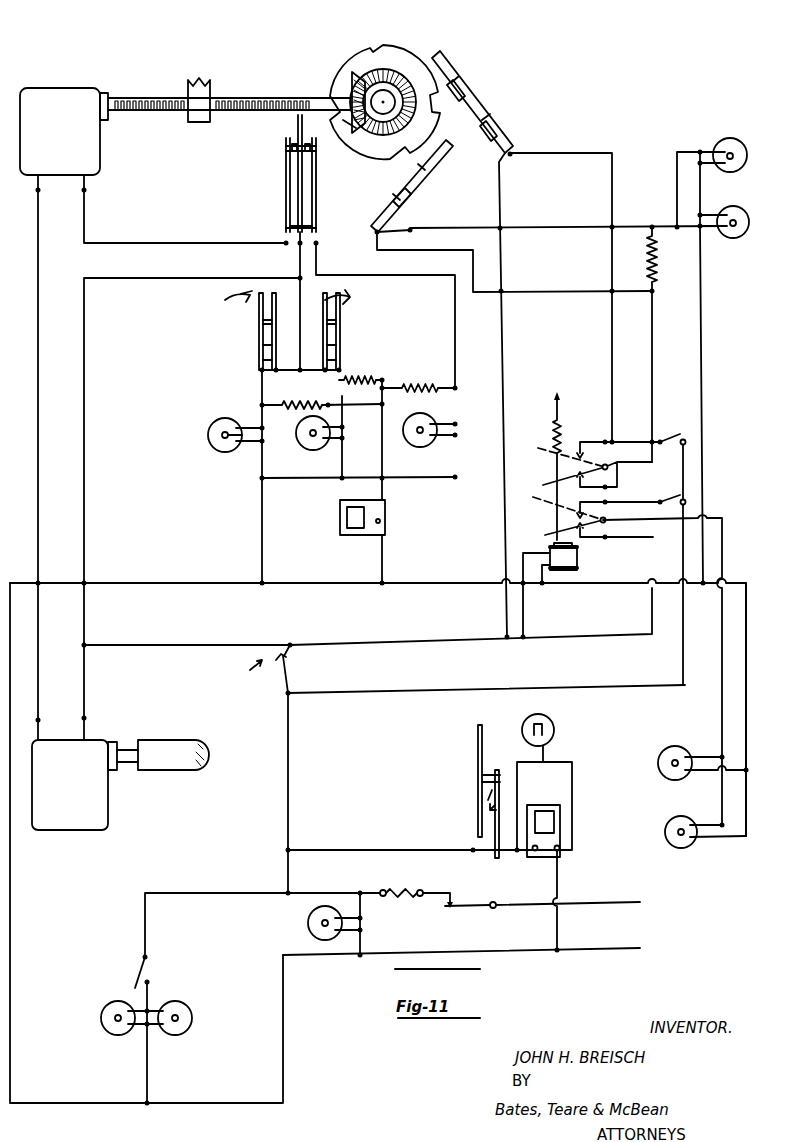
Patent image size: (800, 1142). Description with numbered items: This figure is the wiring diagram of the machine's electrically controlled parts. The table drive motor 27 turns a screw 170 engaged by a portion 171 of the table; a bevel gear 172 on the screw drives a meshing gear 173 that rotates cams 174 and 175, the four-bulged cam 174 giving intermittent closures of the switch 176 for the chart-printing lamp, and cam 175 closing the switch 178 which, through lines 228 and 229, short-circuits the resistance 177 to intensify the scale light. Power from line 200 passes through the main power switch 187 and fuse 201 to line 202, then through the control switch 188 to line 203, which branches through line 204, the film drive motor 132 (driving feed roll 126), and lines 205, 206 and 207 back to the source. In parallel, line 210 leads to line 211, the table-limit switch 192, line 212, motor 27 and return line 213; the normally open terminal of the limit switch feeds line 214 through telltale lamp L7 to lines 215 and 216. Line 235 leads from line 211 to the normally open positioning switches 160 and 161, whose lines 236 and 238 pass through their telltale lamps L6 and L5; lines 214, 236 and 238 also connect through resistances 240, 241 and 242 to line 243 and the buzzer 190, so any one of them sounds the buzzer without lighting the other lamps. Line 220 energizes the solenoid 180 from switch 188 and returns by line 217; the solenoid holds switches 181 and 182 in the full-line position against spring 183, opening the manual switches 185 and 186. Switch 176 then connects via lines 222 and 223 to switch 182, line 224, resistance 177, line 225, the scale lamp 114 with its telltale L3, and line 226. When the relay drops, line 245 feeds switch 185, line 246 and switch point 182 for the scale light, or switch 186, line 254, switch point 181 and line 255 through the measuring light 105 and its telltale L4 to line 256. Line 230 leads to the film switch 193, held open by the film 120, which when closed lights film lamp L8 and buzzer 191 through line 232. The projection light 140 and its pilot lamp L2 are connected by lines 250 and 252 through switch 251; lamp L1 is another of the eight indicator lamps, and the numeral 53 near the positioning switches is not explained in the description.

The table drive motor 27 is at (90, 160).
The screw 170 is at (155, 92).
The portion of the table 171 is at (210, 92).
The bevel gear 172 is at (350, 90).
The meshing gear 173 is at (366, 142).
The cam 174 is at (377, 46).
The cam 175 is at (393, 90).
The switch 176 is at (488, 114).
The switch 178 is at (424, 206).
The resistance 177 is at (648, 266).
The table-limit switch 192 is at (296, 178).
The line 213 is at (40, 290).
The line 212 is at (208, 238).
The line 211 is at (298, 262).
The line 214 is at (372, 273).
The line 210 is at (86, 532).
The line 235 is at (300, 300).
The switch 161 is at (259, 320).
The switch 160 is at (340, 320).
The movement arrows 53 is at (360, 294).
The line 238 is at (262, 383).
The resistance 242 is at (325, 398).
The resistance 241 is at (365, 376).
The resistance 240 is at (420, 382).
The line 243 is at (382, 450).
The line 236 is at (343, 418).
The line 215 is at (326, 474).
The indicator lamp L5 is at (228, 410).
The indicator lamp L6 is at (296, 432).
The telltale light L7 is at (412, 416).
The line 216 is at (262, 530).
The buzzer 190 is at (386, 516).
The line 222 is at (502, 360).
The line 223 is at (612, 340).
The line 229 is at (583, 225).
The line 228 is at (584, 290).
The line 224 is at (654, 355).
The line 225 is at (665, 224).
The scale producing light 114 is at (730, 138).
The indicator lamp L3 is at (733, 206).
The line 226 is at (704, 316).
The line 246 is at (637, 446).
The manually operable switch 185 is at (670, 433).
The connecting switch 182 is at (543, 478).
The spring 183 is at (551, 437).
The line 254 is at (637, 510).
The manually operable switch 186 is at (670, 490).
The connecting switch 181 is at (544, 532).
The line 255 is at (645, 524).
The solenoid 180 is at (572, 561).
The return line 217 is at (207, 587).
The line 220 is at (450, 636).
The line 203 is at (193, 641).
The line 205 is at (42, 680).
The line 204 is at (90, 683).
The motor 132 is at (85, 785).
The feed roll 126 is at (200, 752).
The control switch 188 is at (290, 672).
The line 245 is at (533, 683).
The line 202 is at (290, 786).
The line 230 is at (400, 856).
The film 120 is at (478, 744).
The film switch 193 is at (478, 833).
The buzzer 191 is at (559, 800).
The film light L8 is at (550, 718).
The line 232 is at (560, 869).
The fuse 201 is at (410, 878).
The main power switch 187 is at (462, 908).
The line 200 is at (622, 900).
The line 207 is at (588, 954).
The indicator lamp L1 is at (306, 920).
The line 206 is at (12, 886).
The line 250 is at (226, 893).
The manually operable switch 251 is at (150, 967).
The line 252 is at (150, 1070).
The legend projector light 140 is at (110, 1008).
The pilot lamp L2 is at (183, 1002).
The measuring light 105 is at (663, 750).
The indicator lamp L4 is at (680, 814).
The line 256 is at (748, 678).